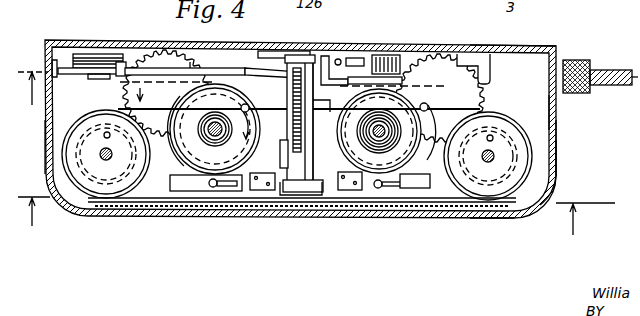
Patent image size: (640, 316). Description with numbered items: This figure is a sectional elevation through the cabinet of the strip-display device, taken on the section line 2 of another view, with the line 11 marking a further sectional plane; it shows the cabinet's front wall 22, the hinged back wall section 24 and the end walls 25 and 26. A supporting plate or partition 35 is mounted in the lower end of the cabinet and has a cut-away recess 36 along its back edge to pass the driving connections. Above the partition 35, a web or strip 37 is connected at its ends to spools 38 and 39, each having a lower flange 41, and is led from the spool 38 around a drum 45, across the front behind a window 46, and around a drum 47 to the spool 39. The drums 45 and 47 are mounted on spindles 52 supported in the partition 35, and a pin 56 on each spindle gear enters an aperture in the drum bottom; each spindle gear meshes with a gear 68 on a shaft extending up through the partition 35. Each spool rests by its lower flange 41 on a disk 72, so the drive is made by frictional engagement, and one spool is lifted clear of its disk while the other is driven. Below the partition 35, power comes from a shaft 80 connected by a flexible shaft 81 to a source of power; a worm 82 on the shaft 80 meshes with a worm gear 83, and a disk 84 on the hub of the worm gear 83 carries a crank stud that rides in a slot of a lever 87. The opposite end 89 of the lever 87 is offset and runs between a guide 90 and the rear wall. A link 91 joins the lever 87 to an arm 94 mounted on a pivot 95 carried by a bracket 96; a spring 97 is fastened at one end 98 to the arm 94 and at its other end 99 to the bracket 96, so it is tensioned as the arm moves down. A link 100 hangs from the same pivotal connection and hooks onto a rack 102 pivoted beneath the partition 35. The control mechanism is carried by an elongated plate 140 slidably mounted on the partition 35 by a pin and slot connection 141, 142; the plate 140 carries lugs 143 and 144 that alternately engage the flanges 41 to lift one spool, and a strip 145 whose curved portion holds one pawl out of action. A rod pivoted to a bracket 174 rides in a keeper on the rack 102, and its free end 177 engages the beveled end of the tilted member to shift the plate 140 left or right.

The section line 2 is at (316, 222).
The section line 11 is at (33, 101).
The front wall 22 is at (515, 218).
The back wall section 24 is at (455, 41).
The end wall 25 is at (556, 135).
The end wall 26 is at (48, 153).
The supporting plate or partition 35 is at (540, 113).
The cut-away portion or recess 36 is at (482, 55).
The web or strip 37 is at (378, 190).
The spool 38 is at (405, 195).
The spool 39 is at (200, 172).
The flange or disk 41 is at (232, 106).
The drum 45 is at (547, 155).
The window 46 is at (315, 196).
The drum 47 is at (122, 205).
The spindle 52 is at (107, 160).
The pin 56 is at (491, 135).
The gear 68 is at (196, 60).
The disk 72 is at (318, 133).
The shaft 80 is at (491, 71).
The flexible shaft 81 is at (597, 70).
The worm 82 is at (420, 42).
The worm gear 83 is at (388, 52).
The disk 84 is at (398, 82).
The lever 87 is at (296, 55).
The opposite end of lever 89 is at (262, 53).
The guide 90 is at (275, 52).
The link 91 is at (323, 58).
The arm 94 is at (178, 70).
The pivot 95 is at (92, 78).
The bracket 96 is at (58, 44).
The spring 97 is at (80, 54).
The spring end 98 is at (120, 85).
The spring end 99 is at (125, 62).
The link 100 is at (290, 126).
The rack 102 is at (300, 192).
The elongated plate 140 is at (185, 184).
The pin 141 is at (213, 189).
The slot 142 is at (263, 190).
The lug 143 is at (352, 192).
The lug 144 is at (290, 192).
The strip 145 is at (283, 154).
The bracket 174 is at (338, 60).
The free end of rod 177 is at (308, 196).